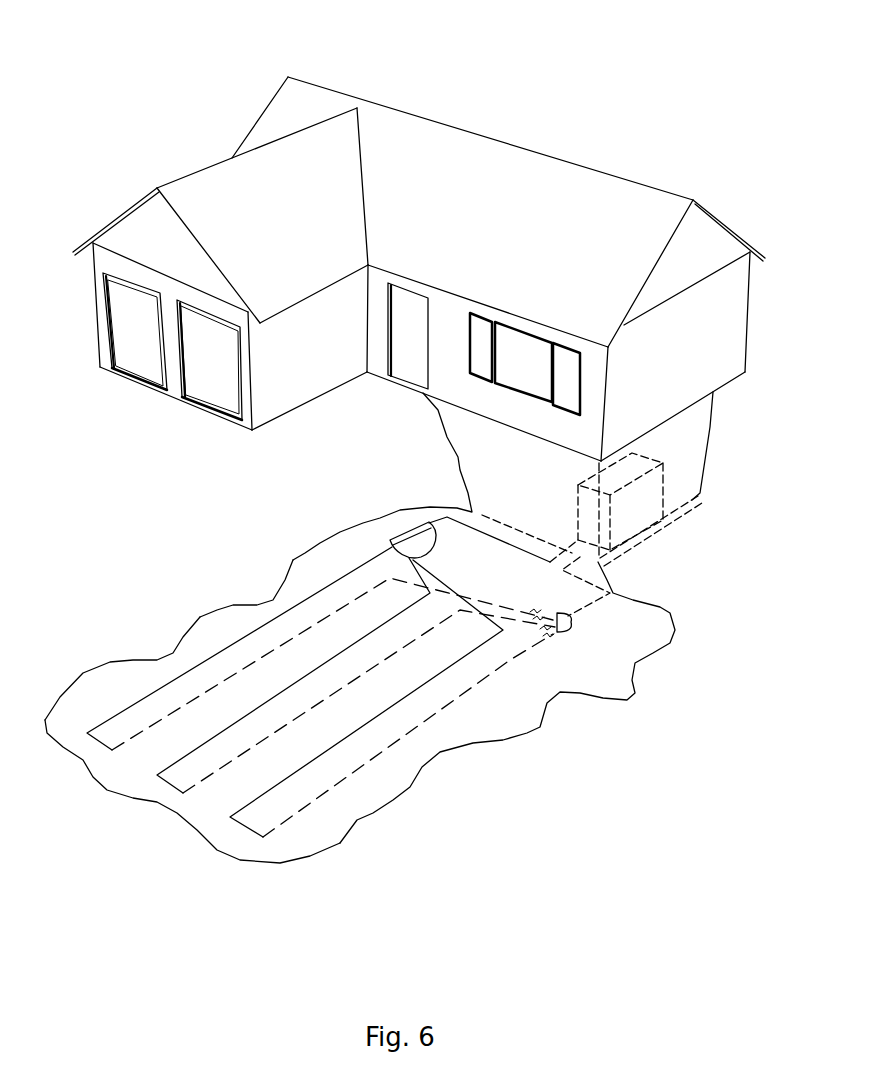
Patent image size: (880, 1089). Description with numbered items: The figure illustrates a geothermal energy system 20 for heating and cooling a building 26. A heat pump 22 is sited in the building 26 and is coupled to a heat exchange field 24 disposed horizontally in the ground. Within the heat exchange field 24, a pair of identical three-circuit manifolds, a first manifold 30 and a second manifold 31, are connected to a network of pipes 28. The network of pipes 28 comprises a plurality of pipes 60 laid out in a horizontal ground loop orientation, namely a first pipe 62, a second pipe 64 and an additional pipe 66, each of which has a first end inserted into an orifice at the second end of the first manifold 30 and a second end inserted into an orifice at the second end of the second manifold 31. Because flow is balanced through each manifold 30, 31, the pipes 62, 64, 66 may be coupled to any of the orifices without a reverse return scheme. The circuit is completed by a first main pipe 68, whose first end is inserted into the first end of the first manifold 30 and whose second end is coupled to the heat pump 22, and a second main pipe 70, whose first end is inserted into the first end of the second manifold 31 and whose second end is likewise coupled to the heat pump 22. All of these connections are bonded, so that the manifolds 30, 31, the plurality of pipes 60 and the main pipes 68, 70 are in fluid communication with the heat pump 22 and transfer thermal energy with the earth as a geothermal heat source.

The geothermal energy system 20 is at (273, 554).
The heat pump 22 is at (646, 516).
The heat exchange field 24 is at (204, 585).
The building 26 is at (265, 91).
The network of pipes 28 is at (170, 655).
The first manifold 30 is at (570, 633).
The second manifold 31 is at (402, 534).
The plurality of pipes 60 is at (194, 833).
The first pipe 62 is at (516, 674).
The second pipe 64 is at (468, 621).
The additional pipe 66 is at (407, 594).
The first main pipe 68 is at (597, 606).
The second main pipe 70 is at (434, 507).